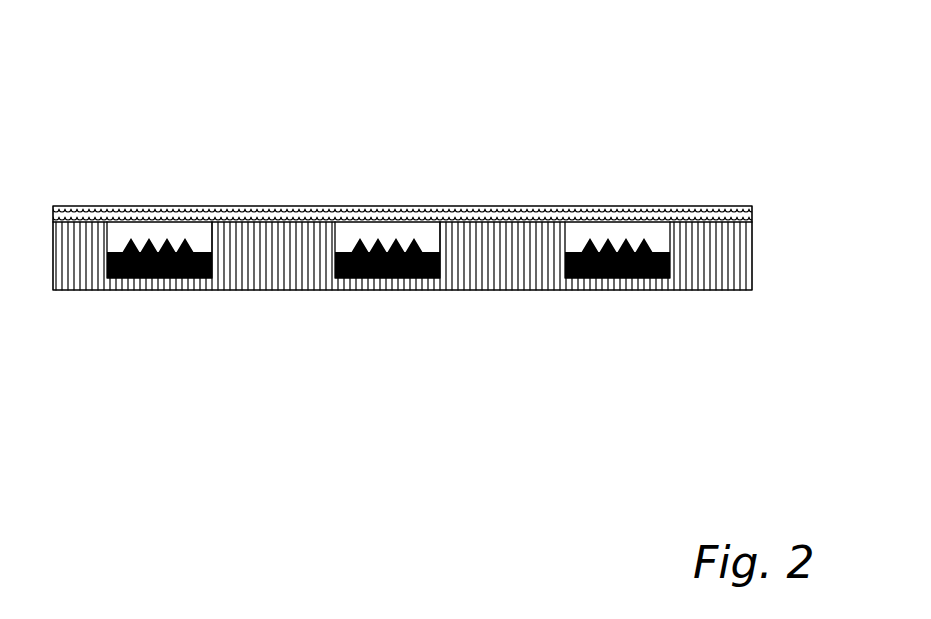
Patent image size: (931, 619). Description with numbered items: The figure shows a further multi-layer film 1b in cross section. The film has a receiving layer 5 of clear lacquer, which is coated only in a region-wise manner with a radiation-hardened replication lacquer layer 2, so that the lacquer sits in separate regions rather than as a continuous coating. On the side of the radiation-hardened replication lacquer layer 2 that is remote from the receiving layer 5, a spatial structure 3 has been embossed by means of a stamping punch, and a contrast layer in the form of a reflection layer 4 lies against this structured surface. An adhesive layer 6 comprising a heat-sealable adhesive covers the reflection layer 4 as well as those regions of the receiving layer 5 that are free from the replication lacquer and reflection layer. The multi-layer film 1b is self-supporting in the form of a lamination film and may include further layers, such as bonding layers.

The multi-layer film 1b is at (105, 190).
The radiation-hardened replication lacquer layer 2 is at (655, 231).
The spatial structure 3 is at (590, 250).
The reflection layer 4 is at (387, 265).
The receiving layer 5 is at (404, 208).
The adhesive layer 6 is at (284, 250).